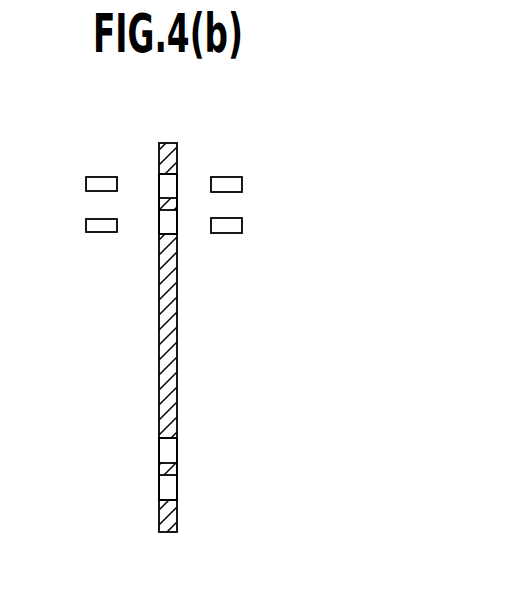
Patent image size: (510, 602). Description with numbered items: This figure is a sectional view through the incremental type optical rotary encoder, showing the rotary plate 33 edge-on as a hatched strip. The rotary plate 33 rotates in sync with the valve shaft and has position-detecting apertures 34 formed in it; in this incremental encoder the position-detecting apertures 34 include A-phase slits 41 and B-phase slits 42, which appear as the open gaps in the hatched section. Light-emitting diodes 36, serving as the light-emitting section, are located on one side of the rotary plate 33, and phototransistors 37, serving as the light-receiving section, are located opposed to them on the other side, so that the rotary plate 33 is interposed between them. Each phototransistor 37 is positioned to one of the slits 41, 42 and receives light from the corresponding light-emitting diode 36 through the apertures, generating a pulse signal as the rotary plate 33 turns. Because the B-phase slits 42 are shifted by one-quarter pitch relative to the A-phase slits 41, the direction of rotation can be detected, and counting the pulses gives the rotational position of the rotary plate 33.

The rotary plate 33 is at (170, 329).
The position-detecting apertures 34 is at (160, 183).
The light-emitting diodes 36 is at (86, 184).
The phototransistors 37 is at (242, 184).
The A-phase slits 41 is at (177, 184).
The B-phase slits 42 is at (171, 228).